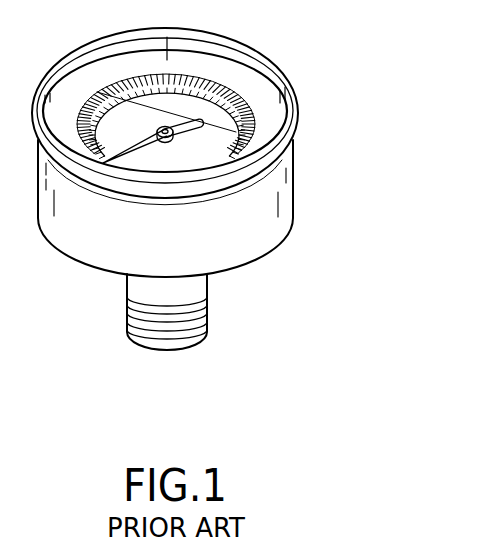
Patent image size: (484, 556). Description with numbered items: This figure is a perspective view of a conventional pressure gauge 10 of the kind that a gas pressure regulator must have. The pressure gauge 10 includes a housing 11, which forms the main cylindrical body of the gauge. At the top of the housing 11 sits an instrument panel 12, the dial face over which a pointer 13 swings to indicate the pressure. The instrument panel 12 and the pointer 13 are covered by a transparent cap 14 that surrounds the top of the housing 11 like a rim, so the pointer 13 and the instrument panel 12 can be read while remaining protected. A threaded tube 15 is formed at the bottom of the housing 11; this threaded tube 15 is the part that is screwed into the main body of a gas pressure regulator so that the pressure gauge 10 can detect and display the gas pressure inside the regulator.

The pressure gauge 10 is at (390, 45).
The housing 11 is at (293, 212).
The instrument panel 12 is at (243, 100).
The pointer 13 is at (236, 132).
The transparent cap 14 is at (232, 33).
The threaded tube 15 is at (207, 320).